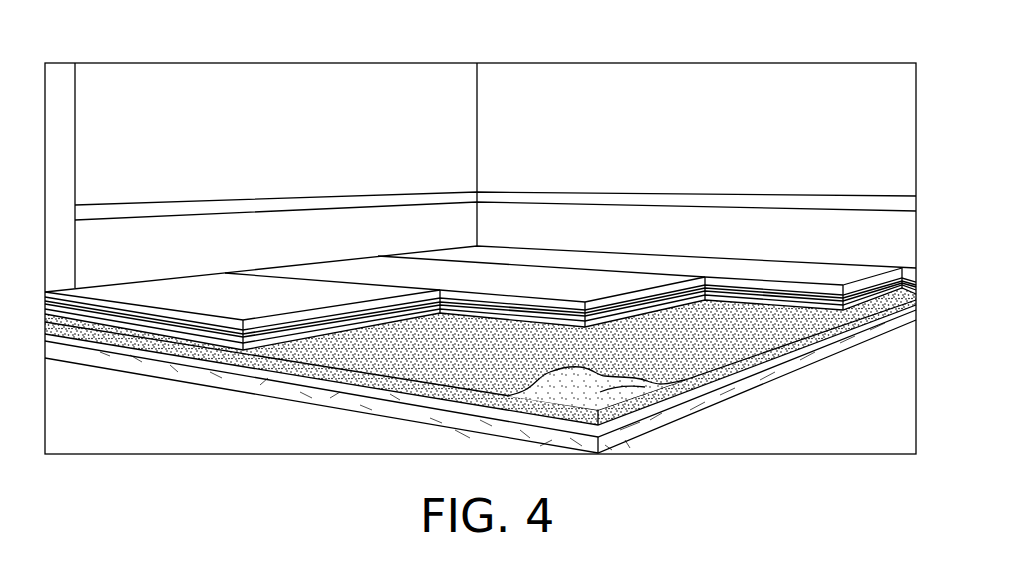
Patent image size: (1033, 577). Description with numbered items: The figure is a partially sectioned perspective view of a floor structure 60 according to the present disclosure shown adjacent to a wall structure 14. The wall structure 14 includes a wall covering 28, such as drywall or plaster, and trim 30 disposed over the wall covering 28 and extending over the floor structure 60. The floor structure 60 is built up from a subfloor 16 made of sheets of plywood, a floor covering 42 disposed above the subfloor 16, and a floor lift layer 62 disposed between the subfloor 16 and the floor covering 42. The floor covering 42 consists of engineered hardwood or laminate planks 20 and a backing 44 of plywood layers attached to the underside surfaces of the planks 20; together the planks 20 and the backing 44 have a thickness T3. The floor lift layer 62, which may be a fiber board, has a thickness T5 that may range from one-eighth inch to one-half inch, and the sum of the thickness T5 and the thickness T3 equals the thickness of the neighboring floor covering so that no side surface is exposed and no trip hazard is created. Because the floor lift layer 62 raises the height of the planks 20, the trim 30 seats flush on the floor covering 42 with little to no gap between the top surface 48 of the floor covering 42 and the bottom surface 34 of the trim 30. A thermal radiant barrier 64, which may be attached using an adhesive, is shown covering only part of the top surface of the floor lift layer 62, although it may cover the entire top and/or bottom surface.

The wall covering 28 is at (808, 82).
The trim 30 is at (140, 242).
The wall structure 14 is at (390, 175).
The floor structure 60 is at (672, 217).
The planks 20 is at (472, 262).
The thickness of the floor covering T3 is at (528, 350).
The bottom surface of the trim 34 is at (195, 303).
The top surface of the floor covering 48 is at (270, 307).
The backing 44 is at (155, 330).
The floor covering 42 is at (187, 363).
The floor lift layer 62 is at (300, 357).
The subfloor 16 is at (347, 405).
The thermal radiant barrier 64 is at (667, 383).
The thickness of the floor lift layer T5 is at (415, 340).